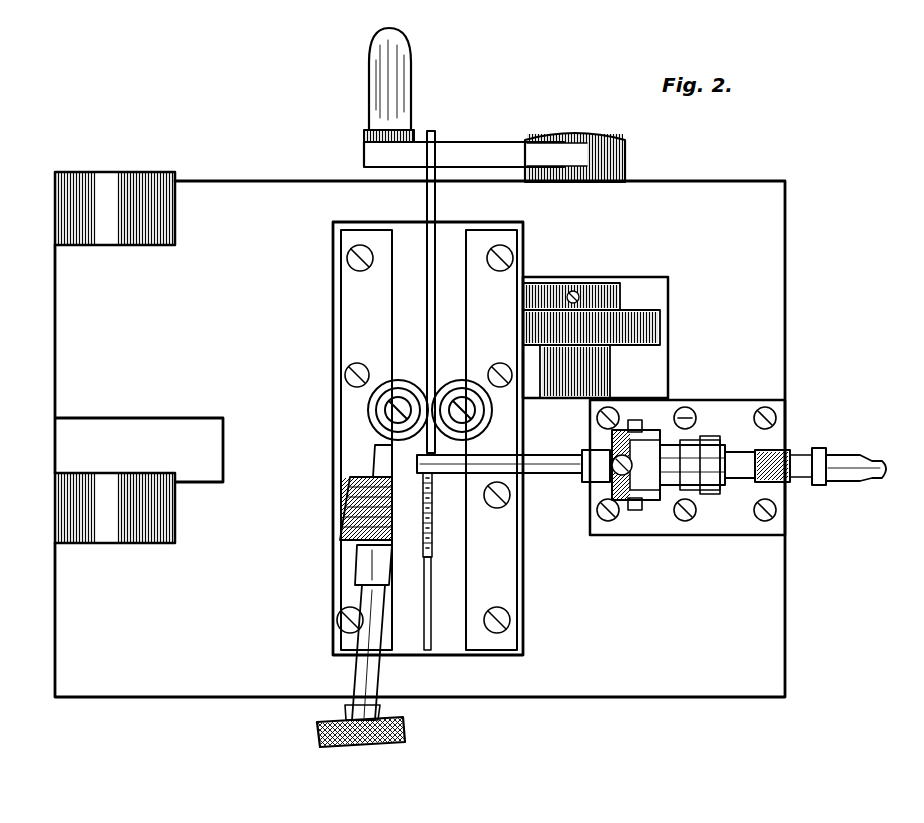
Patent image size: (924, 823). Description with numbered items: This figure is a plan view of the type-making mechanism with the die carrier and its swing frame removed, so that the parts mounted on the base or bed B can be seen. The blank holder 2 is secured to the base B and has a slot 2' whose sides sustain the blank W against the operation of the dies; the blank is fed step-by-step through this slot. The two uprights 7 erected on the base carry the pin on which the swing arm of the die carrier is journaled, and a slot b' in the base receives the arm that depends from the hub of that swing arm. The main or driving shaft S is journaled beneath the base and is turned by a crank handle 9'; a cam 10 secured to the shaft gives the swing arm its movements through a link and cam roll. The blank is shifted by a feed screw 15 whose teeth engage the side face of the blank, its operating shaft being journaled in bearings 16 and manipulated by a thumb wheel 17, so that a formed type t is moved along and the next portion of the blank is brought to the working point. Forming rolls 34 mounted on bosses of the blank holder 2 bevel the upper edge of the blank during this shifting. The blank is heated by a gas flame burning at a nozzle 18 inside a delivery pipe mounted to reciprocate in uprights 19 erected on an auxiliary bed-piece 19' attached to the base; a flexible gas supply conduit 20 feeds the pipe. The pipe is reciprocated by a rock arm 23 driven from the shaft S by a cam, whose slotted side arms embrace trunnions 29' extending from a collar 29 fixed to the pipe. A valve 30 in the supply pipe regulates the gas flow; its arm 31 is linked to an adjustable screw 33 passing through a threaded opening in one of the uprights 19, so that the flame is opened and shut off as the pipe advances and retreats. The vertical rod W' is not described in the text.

The blank holder 2 is at (428, 438).
The slot 2' is at (462, 603).
The uprights 7 is at (128, 247).
The crank handle 9' is at (464, 97).
The cam 10 is at (640, 328).
The feed screw 15 is at (355, 480).
The bearings 16 is at (376, 460).
The thumb wheel 17 is at (362, 742).
The nozzle 18 is at (515, 465).
The uprights 19 is at (695, 492).
The auxiliary bed-piece 19' is at (730, 443).
The flexible gas supply conduit 20 is at (862, 482).
The rock arm 23 is at (656, 505).
The collar 29 is at (682, 506).
The trunnions 29' is at (640, 403).
The valve 30 is at (720, 470).
The valve arm 31 is at (705, 460).
The adjustable screw 33 is at (822, 450).
The forming rolls 34 is at (392, 382).
The base or bed B is at (687, 515).
The main or driving shaft S is at (578, 130).
The blank W is at (337, 508).
The vertical rod W' is at (392, 292).
The slot b' is at (420, 439).
The formed type t is at (422, 520).